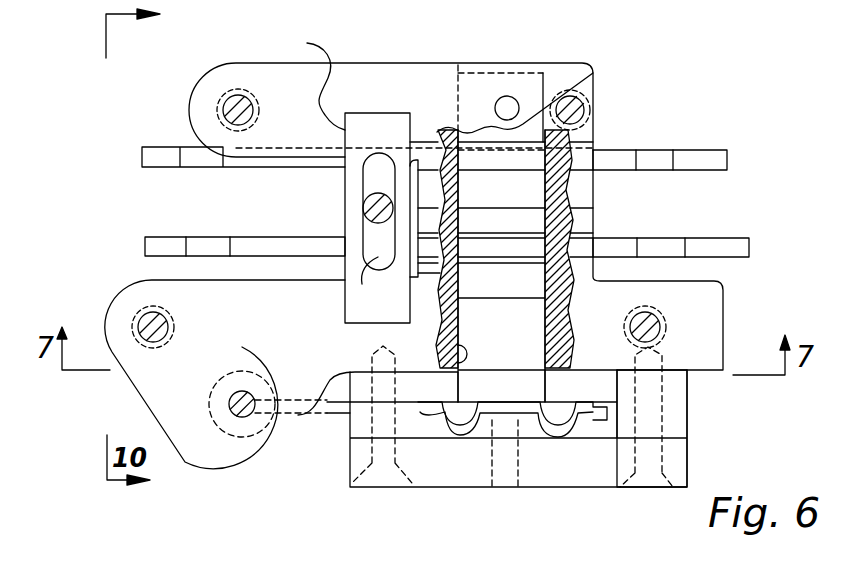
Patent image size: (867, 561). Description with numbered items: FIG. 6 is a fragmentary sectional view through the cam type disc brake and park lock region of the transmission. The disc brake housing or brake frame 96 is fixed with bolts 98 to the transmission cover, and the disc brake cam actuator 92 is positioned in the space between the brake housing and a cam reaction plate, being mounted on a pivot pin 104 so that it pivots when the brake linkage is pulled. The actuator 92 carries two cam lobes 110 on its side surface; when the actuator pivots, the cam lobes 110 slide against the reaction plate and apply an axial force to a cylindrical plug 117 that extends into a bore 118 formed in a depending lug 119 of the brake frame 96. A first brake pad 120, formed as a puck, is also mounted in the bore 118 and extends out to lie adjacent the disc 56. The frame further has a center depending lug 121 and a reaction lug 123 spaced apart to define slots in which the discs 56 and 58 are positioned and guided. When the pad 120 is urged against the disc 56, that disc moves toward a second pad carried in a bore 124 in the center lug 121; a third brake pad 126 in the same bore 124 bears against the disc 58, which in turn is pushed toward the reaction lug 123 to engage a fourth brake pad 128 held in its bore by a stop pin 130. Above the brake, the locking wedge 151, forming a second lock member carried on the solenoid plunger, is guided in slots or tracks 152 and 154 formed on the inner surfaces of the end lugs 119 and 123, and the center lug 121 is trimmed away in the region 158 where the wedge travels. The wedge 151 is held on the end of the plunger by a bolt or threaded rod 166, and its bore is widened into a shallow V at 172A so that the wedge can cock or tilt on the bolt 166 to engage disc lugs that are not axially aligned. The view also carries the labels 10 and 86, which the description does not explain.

The assembly 10 is at (172, 477).
The disc 56 is at (739, 258).
The disc 58 is at (713, 165).
The pivot pin 86 is at (243, 416).
The disc brake cam actuator 92 is at (425, 415).
The disc brake housing 96 is at (704, 378).
The bolts 98 is at (655, 331).
The pivot pin 104 is at (520, 428).
The cam lobes 110 is at (472, 428).
The cylindrical actuator or plug 117 is at (545, 320).
The bore 118 is at (444, 339).
The depending lug 119 is at (723, 290).
The first brake pad 120 is at (504, 283).
The center depending lug 121 is at (563, 210).
The reaction lug 123 is at (221, 80).
The bore 124 is at (457, 193).
The third brake pad 126 is at (522, 190).
The fourth brake pad 128 is at (588, 72).
The stop pin 130 is at (504, 100).
The locking wedge 151 is at (353, 181).
The slot or track 152 is at (345, 308).
The slot or track 154 is at (306, 78).
The region 158 is at (343, 216).
The bolt or threaded rod 166 is at (365, 222).
The shallow V widening of the bore 172A is at (375, 288).